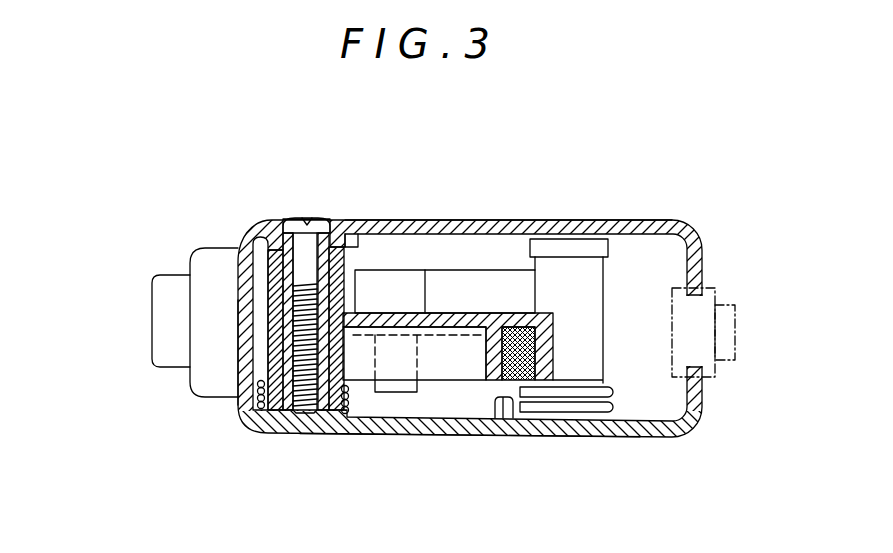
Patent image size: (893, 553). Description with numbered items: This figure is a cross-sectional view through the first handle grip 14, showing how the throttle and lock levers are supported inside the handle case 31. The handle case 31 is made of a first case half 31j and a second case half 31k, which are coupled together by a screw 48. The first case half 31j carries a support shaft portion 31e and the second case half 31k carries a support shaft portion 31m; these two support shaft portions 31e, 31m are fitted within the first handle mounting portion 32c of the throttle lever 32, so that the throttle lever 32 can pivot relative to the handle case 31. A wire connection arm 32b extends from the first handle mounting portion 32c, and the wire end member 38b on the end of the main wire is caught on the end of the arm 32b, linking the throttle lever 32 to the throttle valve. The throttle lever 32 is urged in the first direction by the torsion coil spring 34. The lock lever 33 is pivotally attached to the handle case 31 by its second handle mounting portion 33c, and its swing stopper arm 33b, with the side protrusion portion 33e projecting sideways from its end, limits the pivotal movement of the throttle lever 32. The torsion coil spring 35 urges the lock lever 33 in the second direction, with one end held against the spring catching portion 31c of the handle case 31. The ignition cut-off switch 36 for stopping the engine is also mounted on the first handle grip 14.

The first handle grip 14 is at (224, 130).
The handle case 31 is at (234, 210).
The spring catching portion 31c is at (487, 422).
The support shaft portion 31e is at (247, 372).
The first case half 31j is at (653, 440).
The second case half 31k is at (653, 218).
The support shaft portion 31m is at (278, 273).
The throttle lever 32 is at (139, 326).
The wire connection arm 32b is at (463, 312).
The first handle mounting portion 32c is at (345, 263).
The lock lever 33 is at (513, 260).
The swing stopper arm 33b is at (418, 268).
The second handle mounting portion 33c is at (602, 368).
The side protrusion portion 33e is at (402, 394).
The torsion coil spring 34 is at (355, 410).
The torsion coil spring 35 is at (583, 404).
The ignition cut-off switch 36 is at (737, 318).
The wire end member 38b is at (494, 352).
The screw 48 is at (303, 217).